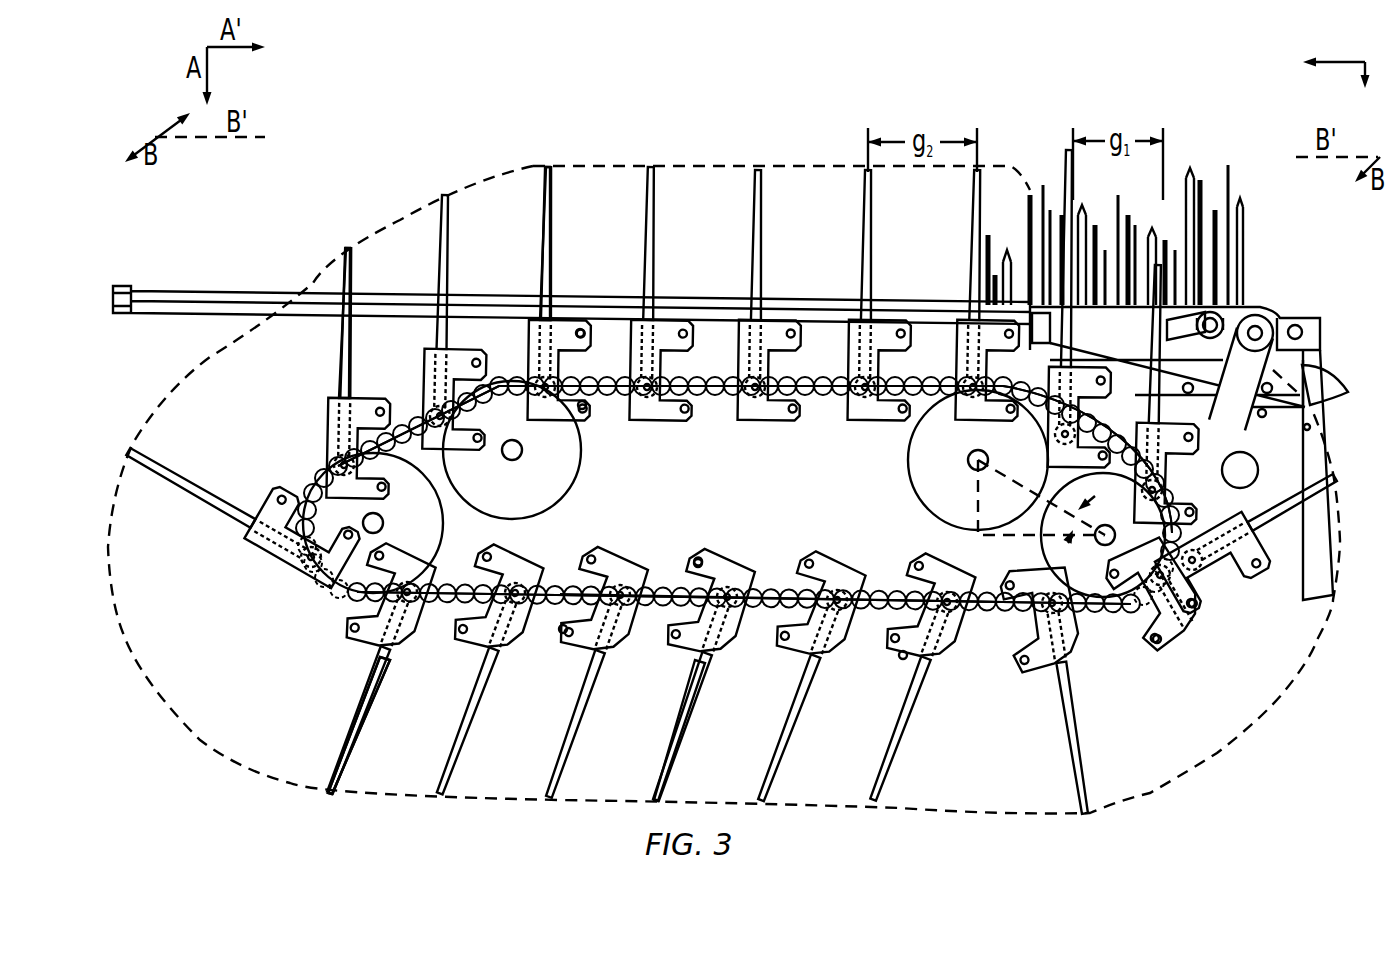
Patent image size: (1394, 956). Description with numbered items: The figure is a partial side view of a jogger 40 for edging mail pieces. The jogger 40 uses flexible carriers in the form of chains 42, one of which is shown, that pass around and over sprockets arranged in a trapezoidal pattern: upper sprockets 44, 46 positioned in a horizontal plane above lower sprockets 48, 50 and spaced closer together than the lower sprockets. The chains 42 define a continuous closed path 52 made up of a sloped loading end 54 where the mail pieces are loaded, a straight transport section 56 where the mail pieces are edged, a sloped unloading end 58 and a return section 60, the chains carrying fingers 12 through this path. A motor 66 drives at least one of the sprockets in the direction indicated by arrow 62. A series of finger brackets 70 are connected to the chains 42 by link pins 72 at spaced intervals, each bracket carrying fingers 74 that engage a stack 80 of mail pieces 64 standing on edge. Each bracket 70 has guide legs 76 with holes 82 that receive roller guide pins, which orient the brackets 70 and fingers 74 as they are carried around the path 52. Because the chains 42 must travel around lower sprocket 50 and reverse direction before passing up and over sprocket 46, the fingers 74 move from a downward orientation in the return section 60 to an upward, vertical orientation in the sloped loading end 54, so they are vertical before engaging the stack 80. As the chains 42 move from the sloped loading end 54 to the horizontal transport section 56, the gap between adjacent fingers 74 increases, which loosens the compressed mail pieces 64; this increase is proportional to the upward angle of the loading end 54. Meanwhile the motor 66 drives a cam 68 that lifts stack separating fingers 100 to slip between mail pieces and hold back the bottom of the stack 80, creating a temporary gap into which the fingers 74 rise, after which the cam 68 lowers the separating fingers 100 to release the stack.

The fingers 12 is at (355, 712).
The jogger 40 is at (470, 103).
The chains 42 is at (724, 397).
The upper sprocket 44 is at (583, 448).
The upper sprocket 46 is at (910, 455).
The lower sprocket 48 is at (445, 520).
The lower sprocket 50 is at (1035, 545).
The continuous closed path 52 is at (820, 412).
The sloped loading end 54 is at (1103, 428).
The straight transport section 56 is at (705, 368).
The sloped unloading end 58 is at (400, 405).
The return section 60 is at (777, 580).
The arrow 62 is at (684, 133).
The mail pieces 64 is at (1232, 181).
The motor 66 is at (1250, 462).
The cam 68 is at (1210, 340).
The finger brackets 70 is at (526, 352).
The link pins 72 is at (520, 606).
The fingers 74 is at (540, 220).
The guide legs 76 is at (565, 320).
The stack 80 is at (1208, 137).
The holes 82 is at (578, 335).
The stack separating fingers 100 is at (1165, 333).